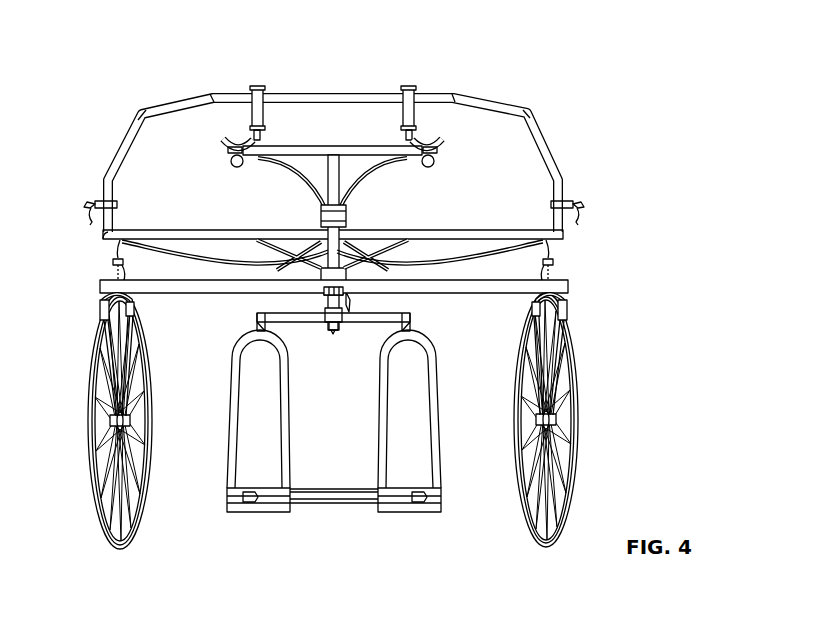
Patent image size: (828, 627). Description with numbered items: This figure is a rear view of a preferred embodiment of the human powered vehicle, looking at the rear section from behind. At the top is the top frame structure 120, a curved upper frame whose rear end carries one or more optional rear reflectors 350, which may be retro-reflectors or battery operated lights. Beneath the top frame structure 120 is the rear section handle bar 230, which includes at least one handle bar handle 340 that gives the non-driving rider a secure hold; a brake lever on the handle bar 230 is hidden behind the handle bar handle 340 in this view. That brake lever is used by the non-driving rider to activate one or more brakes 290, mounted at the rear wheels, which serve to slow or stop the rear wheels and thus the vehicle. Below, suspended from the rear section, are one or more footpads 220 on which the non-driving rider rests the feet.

The top frame structure 120 is at (170, 108).
The rear section handle bar 230 is at (289, 152).
The handle bar handle 340 is at (412, 100).
The rear reflector 350 is at (100, 203).
The brake 290 is at (100, 303).
The footpad 220 is at (264, 509).